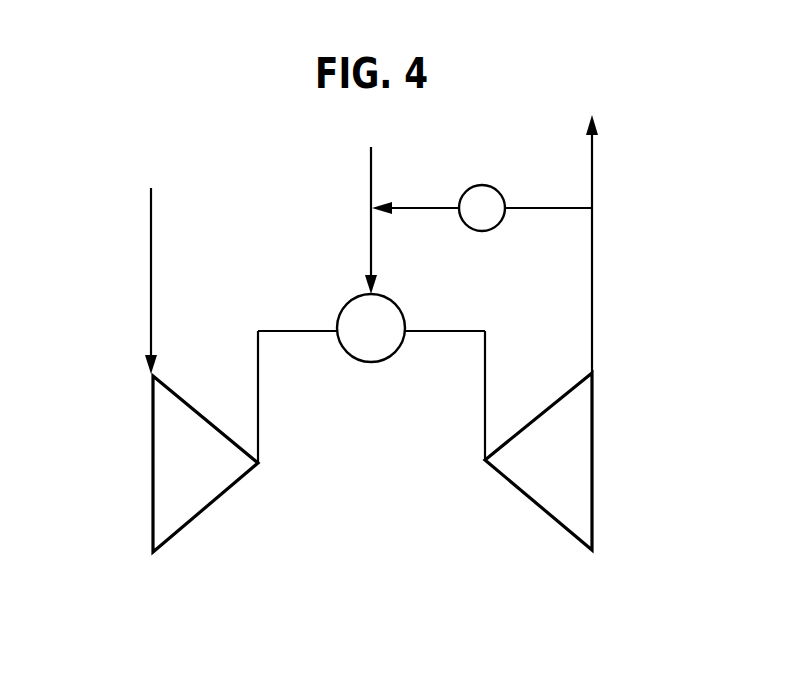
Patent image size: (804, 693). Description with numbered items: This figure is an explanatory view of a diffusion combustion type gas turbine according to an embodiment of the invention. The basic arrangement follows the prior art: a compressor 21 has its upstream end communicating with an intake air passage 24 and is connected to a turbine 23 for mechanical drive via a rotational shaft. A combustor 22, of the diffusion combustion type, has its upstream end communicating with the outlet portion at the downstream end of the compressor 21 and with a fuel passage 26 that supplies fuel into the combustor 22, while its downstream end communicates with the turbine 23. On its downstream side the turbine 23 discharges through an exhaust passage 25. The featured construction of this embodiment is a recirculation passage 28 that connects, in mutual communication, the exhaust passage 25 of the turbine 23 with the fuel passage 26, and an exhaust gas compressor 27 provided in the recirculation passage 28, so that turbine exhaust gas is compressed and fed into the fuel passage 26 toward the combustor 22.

The compressor 21 is at (207, 507).
The combustor 22 is at (376, 362).
The turbine 23 is at (558, 523).
The intake air passage 24 is at (151, 232).
The exhaust passage 25 is at (593, 183).
The fuel passage 26 is at (371, 188).
The exhaust gas compressor 27 is at (486, 231).
The recirculation passage 28 is at (540, 206).